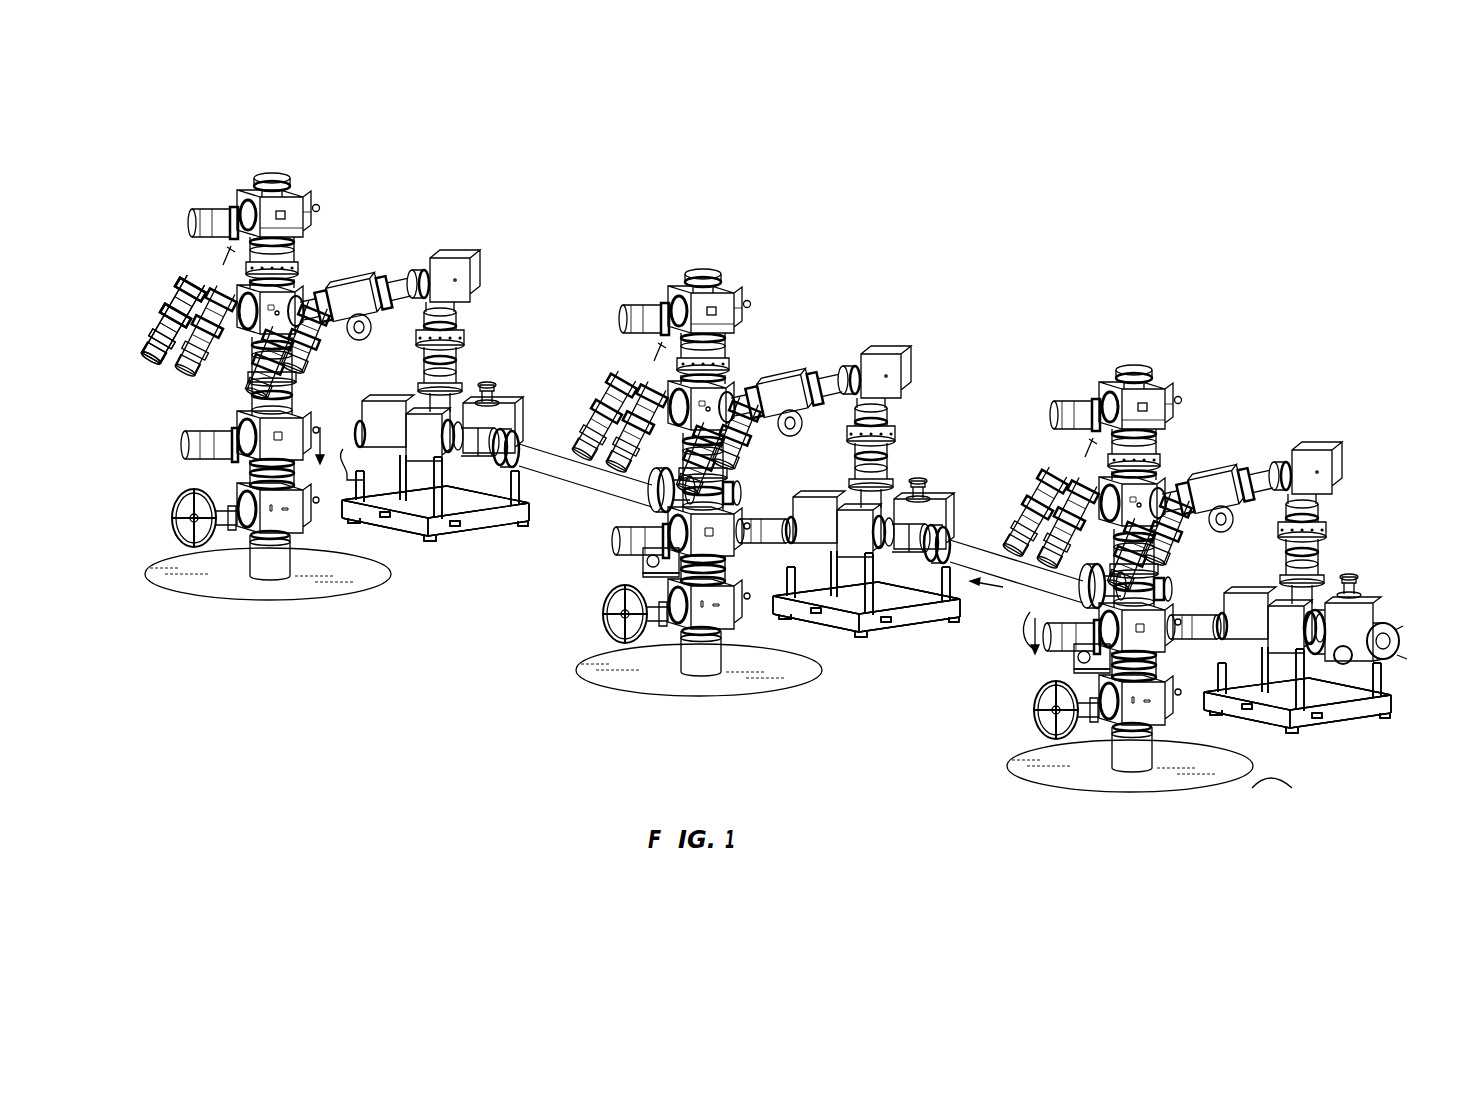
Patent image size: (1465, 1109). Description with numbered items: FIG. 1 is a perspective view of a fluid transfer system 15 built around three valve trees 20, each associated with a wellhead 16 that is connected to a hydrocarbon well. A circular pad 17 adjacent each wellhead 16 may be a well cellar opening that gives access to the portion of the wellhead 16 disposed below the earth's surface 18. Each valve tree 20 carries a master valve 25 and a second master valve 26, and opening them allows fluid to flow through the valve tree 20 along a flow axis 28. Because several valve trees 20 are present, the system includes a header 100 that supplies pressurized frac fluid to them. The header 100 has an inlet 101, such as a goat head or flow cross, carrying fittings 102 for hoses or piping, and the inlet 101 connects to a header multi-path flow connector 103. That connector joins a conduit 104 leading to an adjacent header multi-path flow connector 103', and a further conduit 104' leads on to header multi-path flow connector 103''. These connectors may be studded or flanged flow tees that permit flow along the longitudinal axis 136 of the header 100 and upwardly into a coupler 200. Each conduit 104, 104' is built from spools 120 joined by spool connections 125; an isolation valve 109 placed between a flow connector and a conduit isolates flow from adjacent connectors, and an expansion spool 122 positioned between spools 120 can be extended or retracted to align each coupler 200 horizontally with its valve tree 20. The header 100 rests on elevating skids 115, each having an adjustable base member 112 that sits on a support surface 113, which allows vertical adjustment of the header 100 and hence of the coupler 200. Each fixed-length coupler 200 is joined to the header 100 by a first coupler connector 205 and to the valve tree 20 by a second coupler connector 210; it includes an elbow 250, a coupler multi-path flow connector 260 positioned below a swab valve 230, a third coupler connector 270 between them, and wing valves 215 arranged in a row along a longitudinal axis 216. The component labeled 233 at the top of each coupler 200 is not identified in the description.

The fluid transfer system 15 is at (1050, 228).
The wellhead 16 is at (243, 558).
The circular pad 17 is at (262, 600).
The earth's surface 18 is at (1285, 789).
The valve tree 20 is at (237, 473).
The master valve 25 is at (177, 530).
The second master valve 26 is at (308, 416).
The flow axis 28 is at (328, 436).
The header 100 is at (968, 552).
The inlet 101 is at (1380, 605).
The fittings 102 is at (1350, 583).
The header multi-path flow connector 103 is at (1346, 559).
The header multi-path flow connector 103' is at (913, 464).
The header multi-path flow connector 103'' is at (481, 360).
The conduit 104 is at (1198, 569).
The conduit 104' is at (763, 475).
The isolation valve 109 is at (842, 503).
The adjustable base member 112 is at (457, 497).
The support surface 113 is at (482, 520).
The elevating skid 115 is at (455, 538).
The spool 120 is at (556, 440).
The expansion spool 122 is at (488, 392).
The spool connection 125 is at (645, 496).
The longitudinal axis 136 is at (1002, 589).
The coupler 200 is at (372, 250).
The first coupler connector 205 is at (460, 335).
The second coupler connector 210 is at (240, 372).
The wing valve 215 is at (350, 352).
The longitudinal axis 216 is at (158, 278).
The swab valve 230 is at (303, 197).
The tree cap 233 is at (273, 173).
The elbow 250 is at (452, 257).
The coupler multi-path flow connector 260 is at (292, 290).
The third coupler connector 270 is at (303, 267).